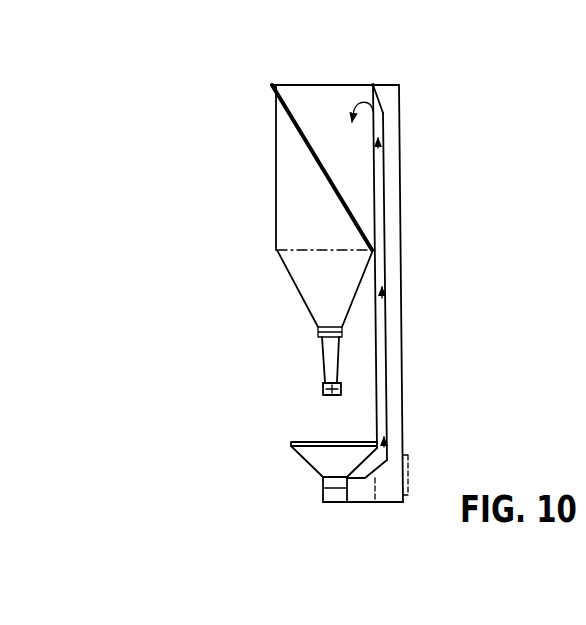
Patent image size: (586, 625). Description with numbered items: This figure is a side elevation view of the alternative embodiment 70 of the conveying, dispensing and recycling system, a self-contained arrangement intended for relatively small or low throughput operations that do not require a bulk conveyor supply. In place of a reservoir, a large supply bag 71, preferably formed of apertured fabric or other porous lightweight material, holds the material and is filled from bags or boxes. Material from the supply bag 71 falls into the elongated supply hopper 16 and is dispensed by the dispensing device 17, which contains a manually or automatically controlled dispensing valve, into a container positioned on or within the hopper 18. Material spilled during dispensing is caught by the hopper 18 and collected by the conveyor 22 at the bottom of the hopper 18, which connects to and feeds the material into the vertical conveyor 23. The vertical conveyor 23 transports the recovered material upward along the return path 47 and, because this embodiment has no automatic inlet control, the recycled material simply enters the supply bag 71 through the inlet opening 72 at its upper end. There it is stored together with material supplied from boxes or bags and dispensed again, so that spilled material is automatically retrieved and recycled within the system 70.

The alternative embodiment of the conveying, dispensing and recycling system 70 is at (403, 81).
The inlet opening 72 is at (372, 100).
The supply bag 71 is at (282, 218).
The return path to the reservoir 47 is at (386, 250).
The vertical conveyor 23 is at (408, 387).
The supply hopper 16 is at (325, 352).
The dispensing device 17 is at (322, 386).
The hopper 18 is at (306, 469).
The conveyor 22 is at (366, 505).